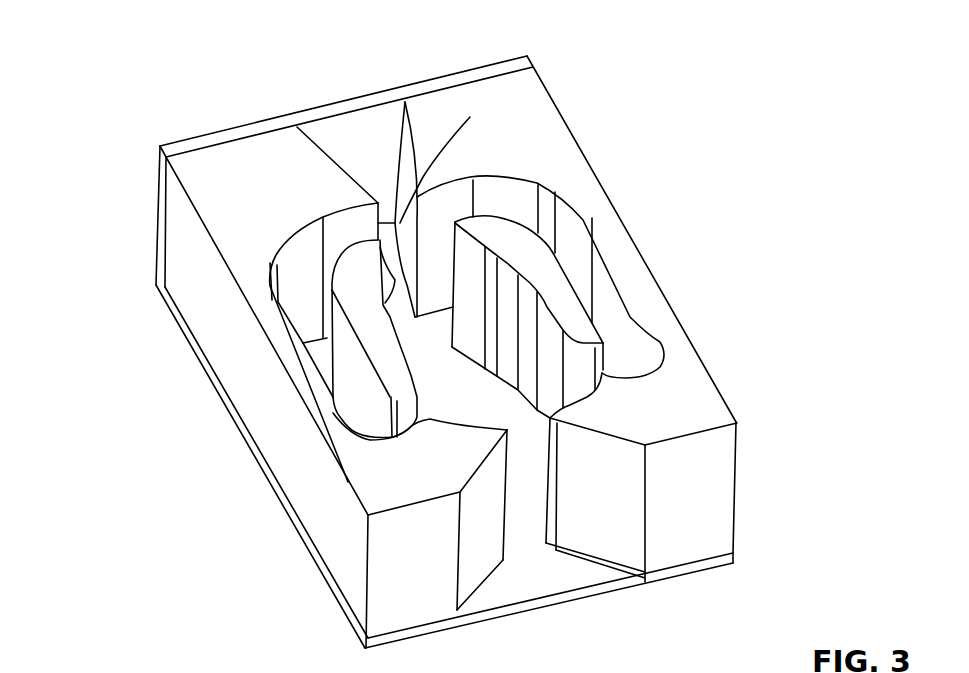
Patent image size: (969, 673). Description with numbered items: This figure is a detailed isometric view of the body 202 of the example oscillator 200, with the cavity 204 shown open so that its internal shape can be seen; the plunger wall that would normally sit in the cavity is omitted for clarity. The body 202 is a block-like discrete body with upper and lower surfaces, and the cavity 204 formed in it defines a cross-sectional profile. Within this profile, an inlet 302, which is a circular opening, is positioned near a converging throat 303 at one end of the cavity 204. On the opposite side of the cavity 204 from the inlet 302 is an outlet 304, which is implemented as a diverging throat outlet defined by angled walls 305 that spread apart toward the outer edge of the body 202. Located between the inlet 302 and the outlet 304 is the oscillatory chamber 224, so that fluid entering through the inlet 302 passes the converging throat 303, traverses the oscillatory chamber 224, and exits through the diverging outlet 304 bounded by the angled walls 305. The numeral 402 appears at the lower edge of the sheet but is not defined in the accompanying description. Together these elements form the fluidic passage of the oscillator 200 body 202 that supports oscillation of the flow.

The oscillator 200 is at (673, 47).
The body 202 is at (609, 198).
The cavity 204 is at (573, 223).
The oscillatory chamber 224 is at (298, 267).
The inlet 302 is at (470, 117).
The converging throat 303 is at (410, 142).
The outlet 304 is at (538, 572).
The angled walls 305 is at (477, 537).
The base edge 402 is at (479, 618).